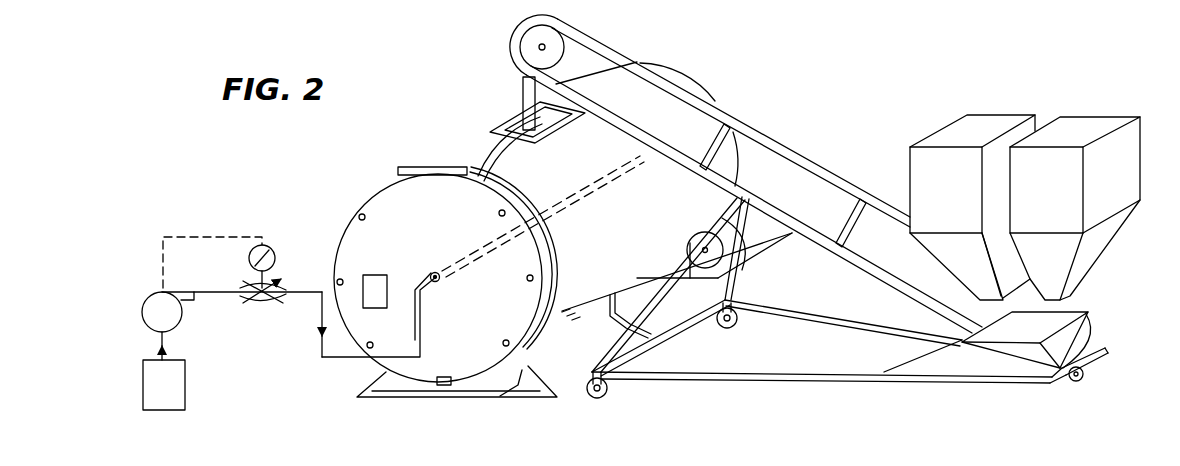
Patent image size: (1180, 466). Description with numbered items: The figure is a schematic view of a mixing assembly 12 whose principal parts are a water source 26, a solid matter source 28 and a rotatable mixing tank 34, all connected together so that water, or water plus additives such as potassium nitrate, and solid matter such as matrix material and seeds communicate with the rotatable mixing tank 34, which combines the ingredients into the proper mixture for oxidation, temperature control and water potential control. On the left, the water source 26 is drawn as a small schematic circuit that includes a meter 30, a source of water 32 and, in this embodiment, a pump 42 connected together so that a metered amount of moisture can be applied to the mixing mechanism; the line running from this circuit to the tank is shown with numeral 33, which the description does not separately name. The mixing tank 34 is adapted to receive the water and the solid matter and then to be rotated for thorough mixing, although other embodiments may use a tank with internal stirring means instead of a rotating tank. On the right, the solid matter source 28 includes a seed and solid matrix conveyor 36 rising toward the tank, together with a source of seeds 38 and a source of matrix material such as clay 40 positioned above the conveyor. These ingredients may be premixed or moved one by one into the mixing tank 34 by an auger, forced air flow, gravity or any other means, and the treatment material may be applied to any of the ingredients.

The mixing assembly 12 is at (806, 67).
The water source 26 is at (228, 220).
The solid matter source 28 is at (1035, 104).
The meter 30 is at (247, 258).
The source of water 32 is at (178, 383).
The air line 33 is at (338, 358).
The rotatable mixing tank 34 is at (447, 151).
The seed and solid matrix conveyor 36 is at (841, 168).
The source of seeds 38 is at (950, 108).
The source of matrix material 40 is at (1100, 104).
The pump 42 is at (148, 288).